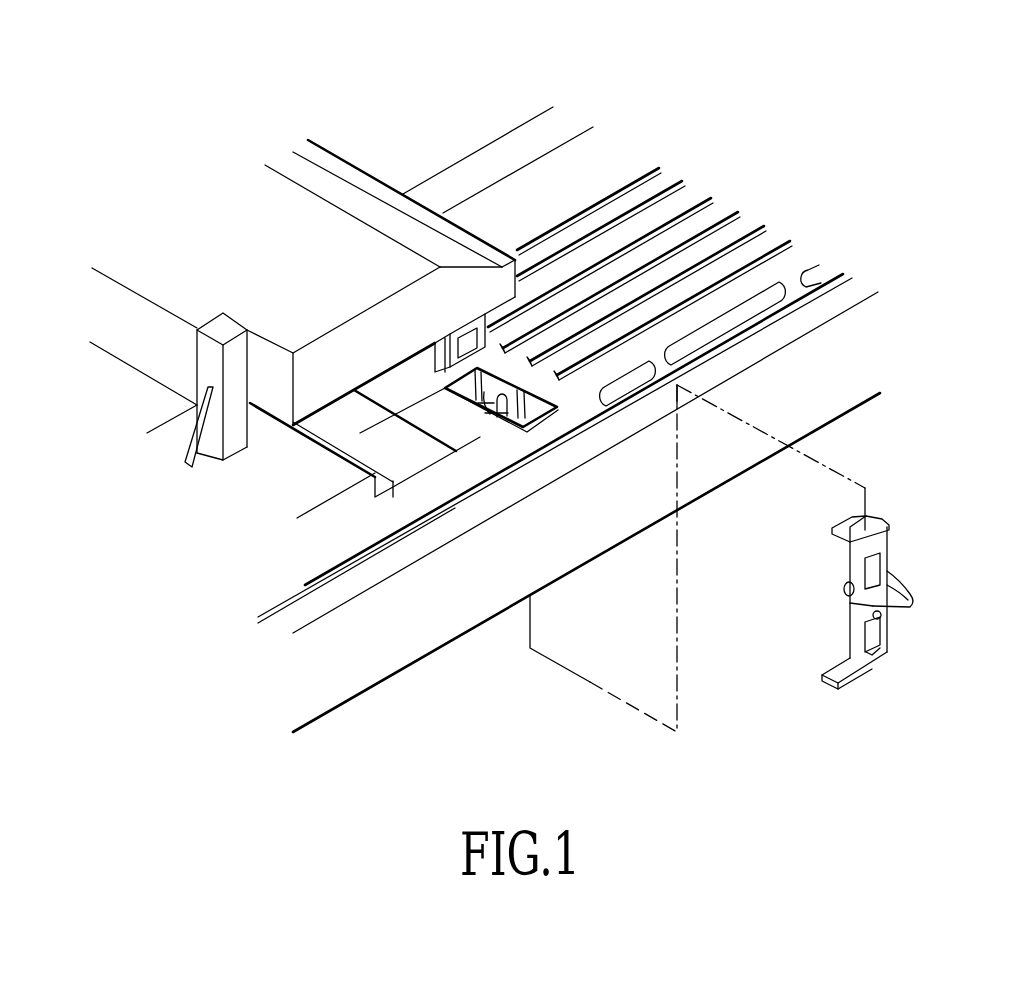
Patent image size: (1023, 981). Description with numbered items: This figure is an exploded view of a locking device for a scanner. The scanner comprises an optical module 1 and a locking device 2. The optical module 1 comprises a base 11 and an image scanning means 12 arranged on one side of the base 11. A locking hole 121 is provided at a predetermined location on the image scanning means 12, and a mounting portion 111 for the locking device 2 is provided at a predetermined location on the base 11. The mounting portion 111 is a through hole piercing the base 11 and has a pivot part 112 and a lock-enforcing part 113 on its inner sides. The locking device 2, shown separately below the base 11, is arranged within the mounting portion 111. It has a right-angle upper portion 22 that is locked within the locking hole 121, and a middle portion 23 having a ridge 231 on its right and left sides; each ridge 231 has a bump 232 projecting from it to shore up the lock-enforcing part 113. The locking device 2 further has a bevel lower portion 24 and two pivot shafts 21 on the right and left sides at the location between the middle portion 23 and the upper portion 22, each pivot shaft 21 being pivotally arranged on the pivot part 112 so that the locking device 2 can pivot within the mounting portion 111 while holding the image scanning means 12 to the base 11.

The optical module 1 is at (509, 87).
The base 11 is at (605, 163).
The mounting portion 111 is at (508, 422).
The pivot part 112 is at (460, 410).
The lock-enforcing part 113 is at (525, 415).
The image scanning means 12 is at (218, 218).
The locking hole 121 is at (460, 338).
The locking device 2 is at (895, 513).
The pivot shaft 21 is at (845, 592).
The right-angle upper portion 22 is at (835, 538).
The middle portion 23 is at (858, 606).
The ridge 231 is at (887, 578).
The bump 232 is at (882, 620).
The bevel lower portion 24 is at (826, 676).